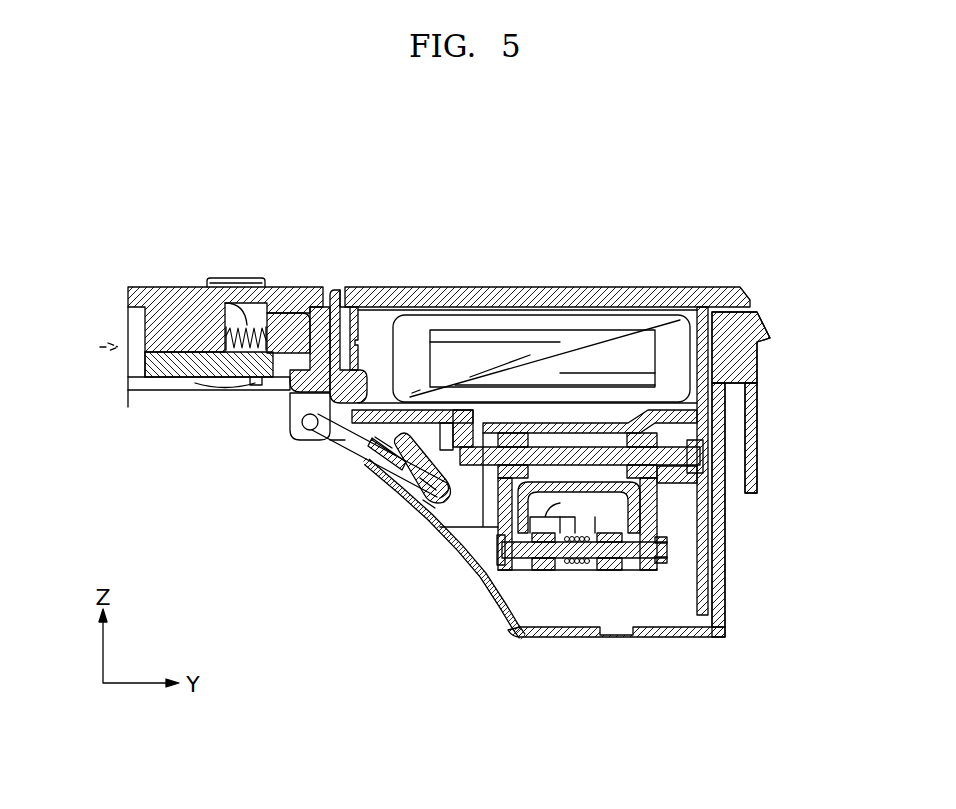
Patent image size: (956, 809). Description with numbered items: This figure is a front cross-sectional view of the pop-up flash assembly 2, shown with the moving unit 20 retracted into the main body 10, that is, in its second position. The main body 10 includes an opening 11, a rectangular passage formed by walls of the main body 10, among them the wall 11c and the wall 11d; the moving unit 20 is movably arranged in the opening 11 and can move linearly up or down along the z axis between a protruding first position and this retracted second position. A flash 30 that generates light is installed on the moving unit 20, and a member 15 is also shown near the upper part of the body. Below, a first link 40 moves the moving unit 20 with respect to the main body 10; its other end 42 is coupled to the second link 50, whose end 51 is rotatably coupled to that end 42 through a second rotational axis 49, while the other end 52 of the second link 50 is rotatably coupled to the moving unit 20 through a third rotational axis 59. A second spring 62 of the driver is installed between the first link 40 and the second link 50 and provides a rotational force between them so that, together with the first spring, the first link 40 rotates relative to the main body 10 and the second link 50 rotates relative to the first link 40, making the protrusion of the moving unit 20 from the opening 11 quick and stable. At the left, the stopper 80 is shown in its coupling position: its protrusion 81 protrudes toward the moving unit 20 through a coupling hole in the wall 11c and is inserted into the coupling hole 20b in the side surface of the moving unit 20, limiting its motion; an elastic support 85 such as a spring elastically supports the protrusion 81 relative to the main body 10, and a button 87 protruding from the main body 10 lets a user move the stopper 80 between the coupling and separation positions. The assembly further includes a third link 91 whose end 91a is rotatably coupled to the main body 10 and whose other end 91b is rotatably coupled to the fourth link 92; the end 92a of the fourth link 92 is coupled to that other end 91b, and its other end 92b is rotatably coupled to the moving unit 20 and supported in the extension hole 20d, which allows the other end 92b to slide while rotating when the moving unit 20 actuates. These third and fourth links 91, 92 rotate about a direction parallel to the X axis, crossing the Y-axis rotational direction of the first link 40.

The pop-up flash assembly 2 is at (571, 282).
The main body 10 is at (763, 337).
The opening 11 is at (698, 300).
The wall 11c is at (342, 288).
The wall 11d is at (720, 431).
The latch member 15 is at (303, 288).
The moving unit 20 is at (368, 288).
The coupling hole 20b is at (340, 433).
The extension hole 20d is at (392, 455).
The flash 30 is at (456, 328).
The first link 40 is at (565, 578).
The other end of the first link 42 is at (537, 570).
The second rotational axis 49 is at (490, 555).
The second link 50 is at (668, 513).
The end of the second link 51 is at (655, 560).
The other end of the second link 52 is at (748, 490).
The third rotational axis 59 is at (702, 457).
The second spring 62 is at (585, 566).
The stopper 80 is at (226, 452).
The protrusion 81 is at (293, 405).
The elastic support 85 is at (240, 353).
The button 87 is at (236, 278).
The third link 91 is at (398, 458).
The end of the third link 91a is at (308, 432).
The other end of the third link 91b is at (425, 510).
The fourth link 92 is at (415, 478).
The end of the fourth link 92a is at (433, 485).
The other end of the fourth link 92b is at (385, 440).